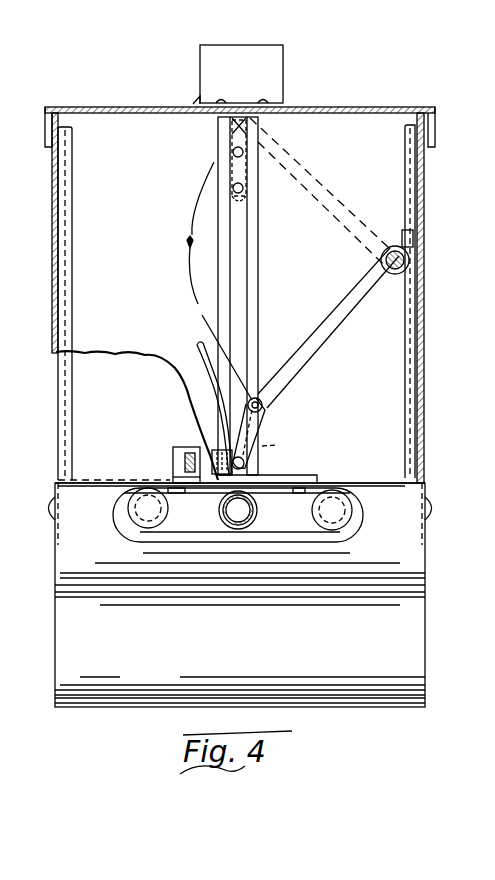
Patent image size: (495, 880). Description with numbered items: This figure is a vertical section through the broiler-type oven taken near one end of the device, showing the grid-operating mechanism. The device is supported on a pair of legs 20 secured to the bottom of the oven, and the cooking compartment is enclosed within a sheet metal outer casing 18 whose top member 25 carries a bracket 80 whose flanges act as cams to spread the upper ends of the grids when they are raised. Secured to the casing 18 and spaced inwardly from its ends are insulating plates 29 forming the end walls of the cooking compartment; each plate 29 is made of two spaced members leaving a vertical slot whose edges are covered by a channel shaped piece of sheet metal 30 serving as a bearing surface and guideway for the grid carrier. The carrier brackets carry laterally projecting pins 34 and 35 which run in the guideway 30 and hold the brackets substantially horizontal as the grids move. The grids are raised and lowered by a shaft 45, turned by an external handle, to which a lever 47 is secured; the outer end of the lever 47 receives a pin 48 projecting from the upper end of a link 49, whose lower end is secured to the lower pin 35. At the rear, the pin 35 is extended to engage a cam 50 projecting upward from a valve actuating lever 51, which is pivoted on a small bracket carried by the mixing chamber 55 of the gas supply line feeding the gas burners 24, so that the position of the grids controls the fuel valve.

The bracket 80 is at (238, 74).
The top member 25 is at (326, 106).
The outer casing 18 is at (423, 324).
The plates 29 is at (244, 169).
The channel shaped piece of sheet metal 30 is at (238, 253).
The shaft 45 is at (410, 258).
The levers 47 is at (320, 308).
The pin 48 is at (263, 405).
The link 49 is at (262, 436).
The pin 34 is at (283, 447).
The pin 35 is at (246, 466).
The cam 50 is at (200, 343).
The valve actuating lever 51 is at (188, 448).
The legs 20 is at (240, 591).
The gas burners 24 is at (238, 515).
The mixing chamber 55 is at (238, 510).